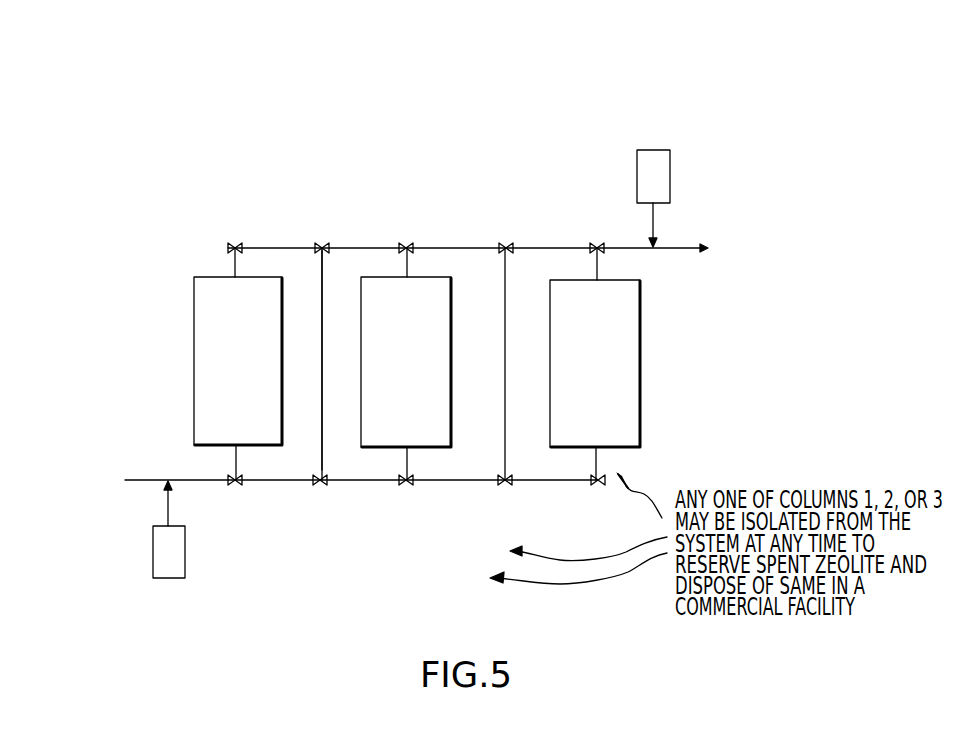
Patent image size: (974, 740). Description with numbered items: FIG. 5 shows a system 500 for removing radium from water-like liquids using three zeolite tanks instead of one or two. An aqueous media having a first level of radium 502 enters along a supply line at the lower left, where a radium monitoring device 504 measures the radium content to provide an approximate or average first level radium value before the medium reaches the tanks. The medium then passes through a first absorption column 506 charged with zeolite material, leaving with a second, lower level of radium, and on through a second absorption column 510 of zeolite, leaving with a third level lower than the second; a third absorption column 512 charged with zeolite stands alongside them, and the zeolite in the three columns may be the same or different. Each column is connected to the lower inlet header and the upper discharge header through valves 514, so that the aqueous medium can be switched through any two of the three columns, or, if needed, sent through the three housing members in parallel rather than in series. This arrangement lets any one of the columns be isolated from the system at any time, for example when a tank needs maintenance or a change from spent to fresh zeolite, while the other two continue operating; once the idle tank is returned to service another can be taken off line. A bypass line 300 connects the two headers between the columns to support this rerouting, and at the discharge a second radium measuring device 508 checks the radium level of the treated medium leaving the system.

The system 500 is at (436, 110).
The aqueous media having a first level of radium 502 is at (124, 480).
The radium monitoring device 504 is at (185, 556).
The first absorption column 506 is at (198, 324).
The second radium measuring device 508 is at (670, 184).
The second absorption column 510 is at (405, 328).
The third absorption column 512 is at (622, 348).
The valves 514 is at (323, 246).
The bypass line 300 is at (323, 254).